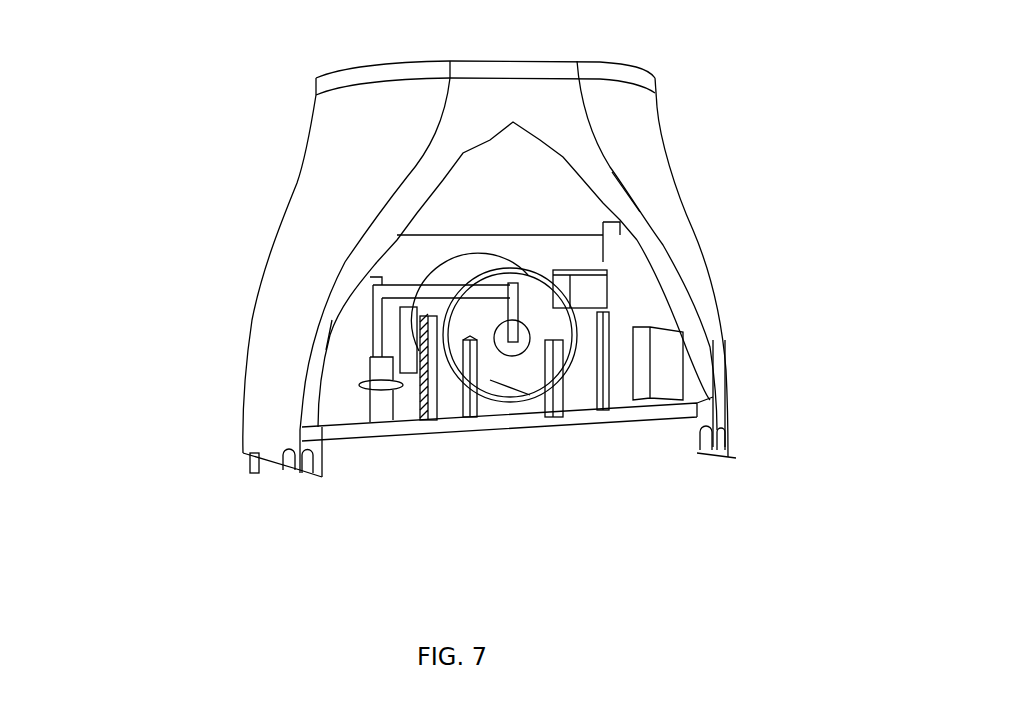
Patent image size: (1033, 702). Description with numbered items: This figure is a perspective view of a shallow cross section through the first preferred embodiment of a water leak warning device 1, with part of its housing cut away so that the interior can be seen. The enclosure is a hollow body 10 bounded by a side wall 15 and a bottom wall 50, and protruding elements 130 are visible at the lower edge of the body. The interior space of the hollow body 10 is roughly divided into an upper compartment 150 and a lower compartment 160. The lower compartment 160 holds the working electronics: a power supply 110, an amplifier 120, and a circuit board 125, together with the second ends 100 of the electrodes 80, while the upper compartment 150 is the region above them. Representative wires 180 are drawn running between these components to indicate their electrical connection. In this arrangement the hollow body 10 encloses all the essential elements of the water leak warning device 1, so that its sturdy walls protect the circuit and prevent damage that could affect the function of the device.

The water leak warning device 1 is at (238, 107).
The hollow body 10 is at (238, 181).
The side wall 15 is at (620, 207).
The bottom wall 50 is at (657, 415).
The electrodes 80 is at (378, 375).
The second ends 100 is at (372, 372).
The power supply 110 is at (508, 368).
The amplifier 120 is at (580, 288).
The circuit board 125 is at (637, 298).
The protruding elements 130 is at (273, 460).
The upper compartment 150 is at (525, 190).
The lower compartment 160 is at (353, 363).
The representative wires 180 is at (385, 283).